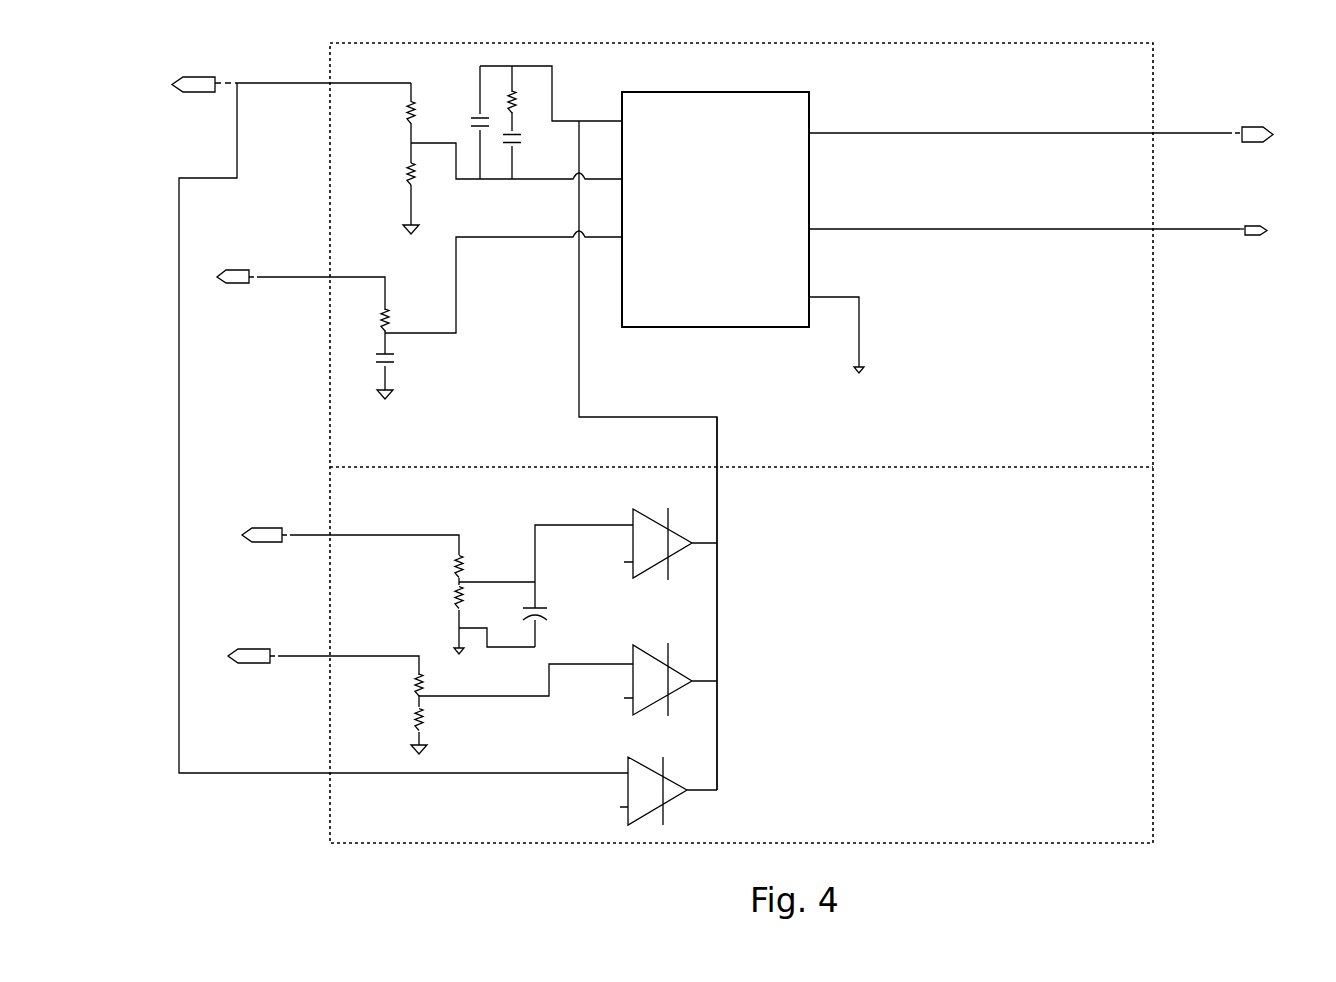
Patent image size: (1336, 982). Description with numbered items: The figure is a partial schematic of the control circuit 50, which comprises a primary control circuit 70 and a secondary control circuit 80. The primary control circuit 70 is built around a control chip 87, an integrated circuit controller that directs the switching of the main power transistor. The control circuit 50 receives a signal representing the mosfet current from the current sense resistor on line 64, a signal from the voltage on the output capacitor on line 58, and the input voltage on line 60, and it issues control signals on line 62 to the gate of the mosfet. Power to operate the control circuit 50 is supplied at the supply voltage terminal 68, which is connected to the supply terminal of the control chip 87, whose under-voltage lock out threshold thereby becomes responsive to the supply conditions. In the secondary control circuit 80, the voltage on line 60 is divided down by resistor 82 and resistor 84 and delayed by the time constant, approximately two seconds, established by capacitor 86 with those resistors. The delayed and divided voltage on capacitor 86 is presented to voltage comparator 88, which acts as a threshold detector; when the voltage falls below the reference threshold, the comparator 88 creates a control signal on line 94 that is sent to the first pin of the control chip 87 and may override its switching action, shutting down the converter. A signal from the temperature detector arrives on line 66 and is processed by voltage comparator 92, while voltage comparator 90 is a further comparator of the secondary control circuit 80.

The control circuit 50 is at (748, 21).
The line 58 is at (192, 93).
The line 60 is at (268, 517).
The line 62 is at (1268, 219).
The line 64 is at (248, 269).
The line 66 is at (253, 641).
The Vcc terminal 68 is at (1269, 122).
The primary control circuit 70 is at (1156, 80).
The secondary control circuit 80 is at (1154, 602).
The resistor 82 is at (379, 560).
The resistor 84 is at (480, 621).
The capacitor 86 is at (546, 586).
The control chip 87 is at (790, 346).
The voltage comparator 88 is at (650, 544).
The voltage comparator 90 is at (500, 698).
The voltage comparator 92 is at (647, 791).
The line 94 is at (726, 570).